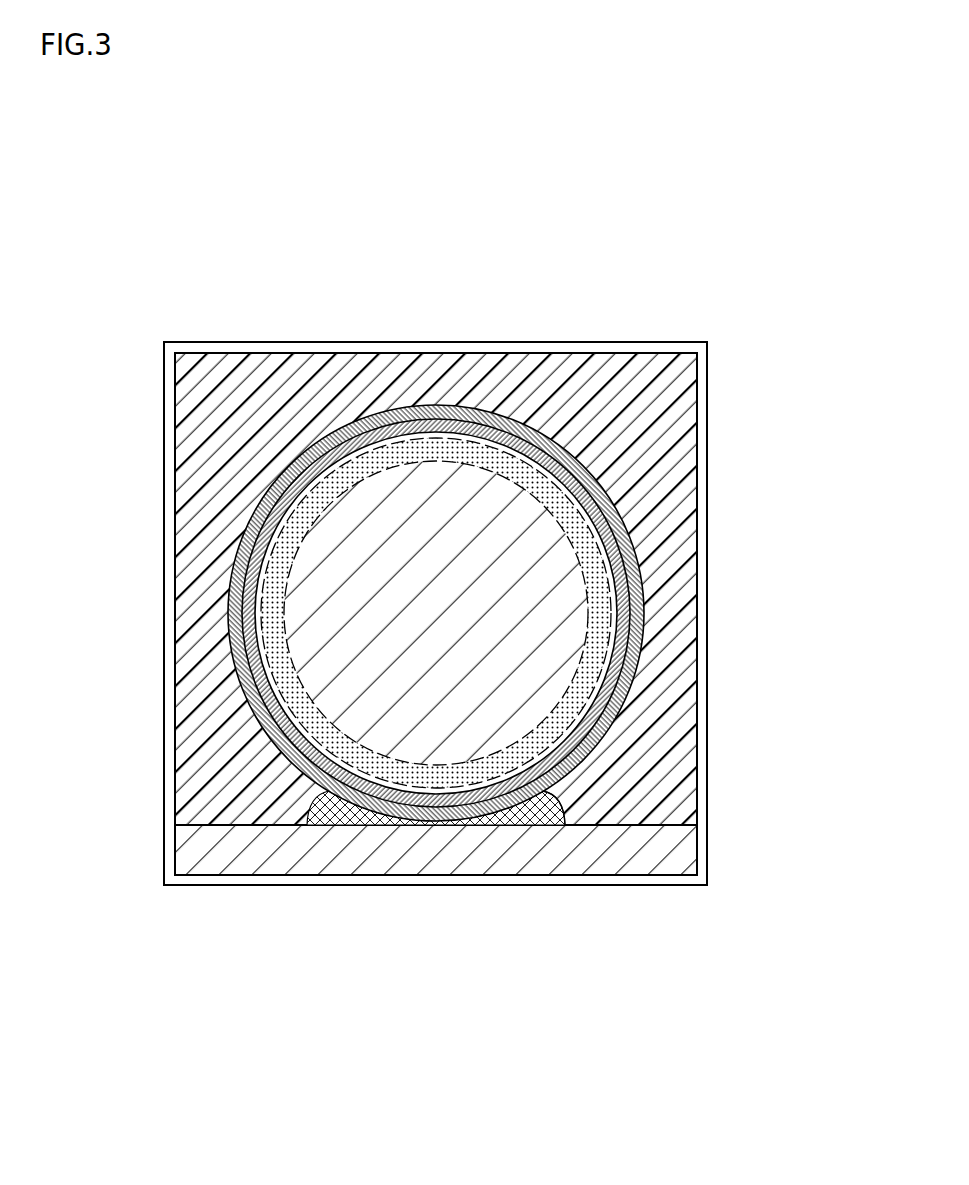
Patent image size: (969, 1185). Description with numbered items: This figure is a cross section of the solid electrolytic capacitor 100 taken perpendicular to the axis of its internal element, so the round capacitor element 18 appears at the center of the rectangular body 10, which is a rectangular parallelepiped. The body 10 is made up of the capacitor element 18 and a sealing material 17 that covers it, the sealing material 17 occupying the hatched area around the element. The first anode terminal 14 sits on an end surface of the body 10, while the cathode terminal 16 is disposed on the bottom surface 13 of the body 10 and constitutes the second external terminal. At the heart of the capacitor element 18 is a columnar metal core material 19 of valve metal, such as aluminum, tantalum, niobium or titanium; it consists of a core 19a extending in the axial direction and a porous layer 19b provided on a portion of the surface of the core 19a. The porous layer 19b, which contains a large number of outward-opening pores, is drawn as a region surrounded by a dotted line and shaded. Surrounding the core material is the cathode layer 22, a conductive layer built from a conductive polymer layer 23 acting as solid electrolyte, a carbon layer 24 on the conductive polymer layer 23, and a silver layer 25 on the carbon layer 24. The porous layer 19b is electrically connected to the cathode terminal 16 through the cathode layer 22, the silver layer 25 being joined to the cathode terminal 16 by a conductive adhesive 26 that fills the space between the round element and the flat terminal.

The solid electrolytic capacitor 100 is at (267, 243).
The body 10 is at (517, 346).
The bottom surface 13 is at (487, 876).
The first anode terminal 14 is at (164, 545).
The cathode terminal 16 is at (400, 867).
The sealing material 17 is at (180, 452).
The capacitor element 18 is at (437, 405).
The metal core material 19 is at (805, 515).
The core 19a is at (552, 537).
The porous layer 19b is at (605, 583).
The cathode layer 22 is at (573, 777).
The conductive polymer layer 23 is at (590, 680).
The carbon layer 24 is at (618, 700).
The silver layer 25 is at (612, 729).
The conductive adhesive 26 is at (318, 815).